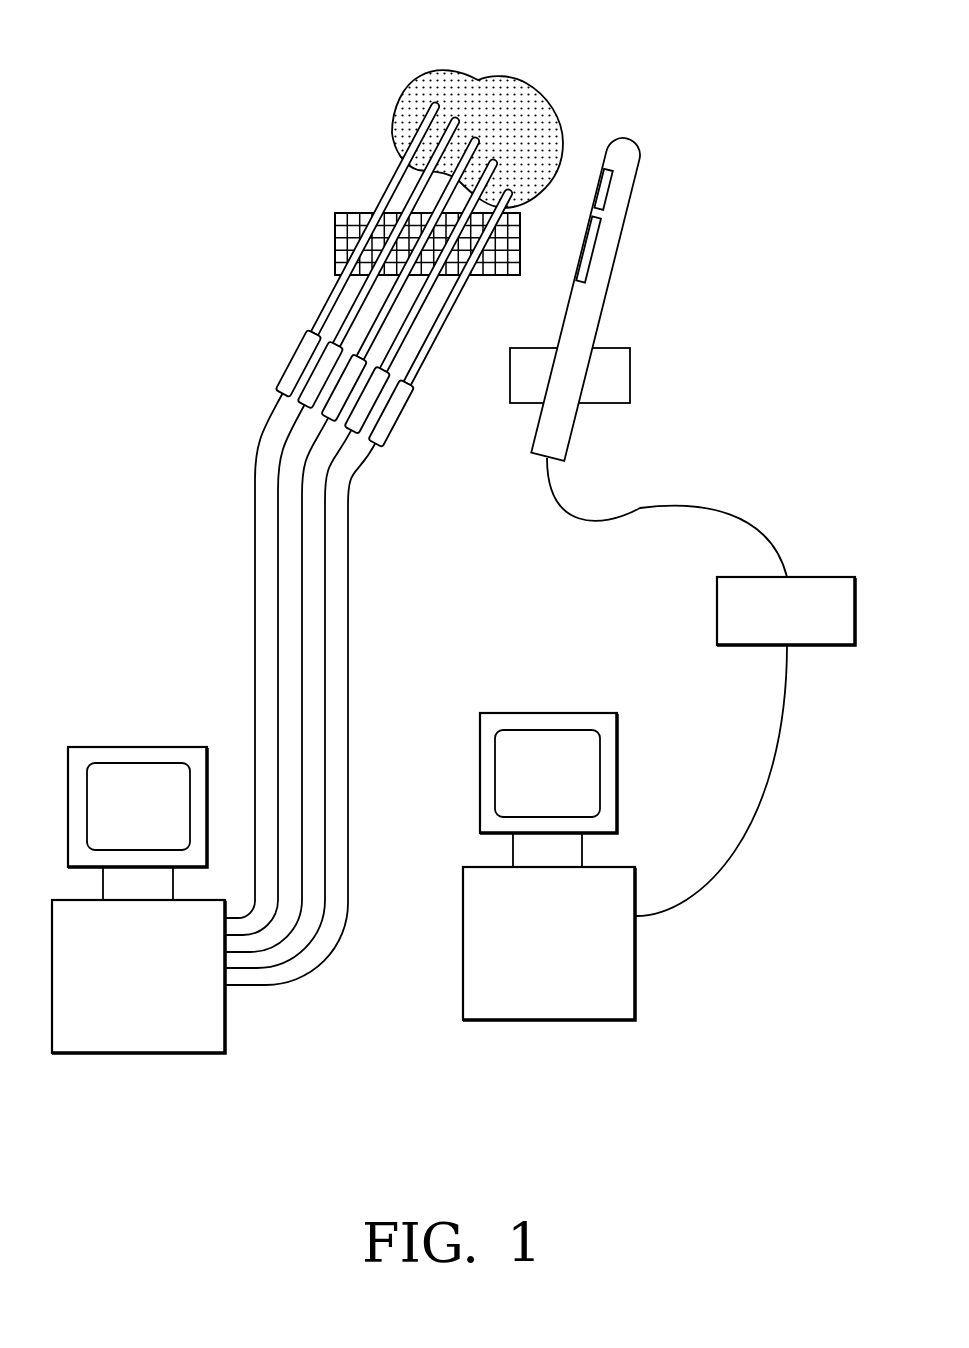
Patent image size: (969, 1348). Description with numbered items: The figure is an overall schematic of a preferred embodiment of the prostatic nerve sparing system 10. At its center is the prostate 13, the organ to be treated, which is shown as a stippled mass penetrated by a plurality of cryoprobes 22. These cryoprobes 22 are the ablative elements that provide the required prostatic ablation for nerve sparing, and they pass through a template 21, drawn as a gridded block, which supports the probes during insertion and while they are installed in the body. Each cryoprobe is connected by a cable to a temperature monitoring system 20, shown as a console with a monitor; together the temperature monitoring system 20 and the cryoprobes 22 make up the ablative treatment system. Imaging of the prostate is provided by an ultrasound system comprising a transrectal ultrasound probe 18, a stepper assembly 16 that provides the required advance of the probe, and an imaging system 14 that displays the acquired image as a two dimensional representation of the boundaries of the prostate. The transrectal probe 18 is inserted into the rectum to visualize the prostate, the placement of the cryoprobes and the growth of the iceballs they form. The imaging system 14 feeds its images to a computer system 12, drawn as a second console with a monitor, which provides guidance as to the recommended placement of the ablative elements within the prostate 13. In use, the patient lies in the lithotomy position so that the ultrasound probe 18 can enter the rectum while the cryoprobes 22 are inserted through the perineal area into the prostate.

The prostatic nerve sparing system 10 is at (764, 975).
The computer system 12 is at (547, 1035).
The prostate 13 is at (512, 72).
The ultrasound system 14 is at (812, 577).
The stepper assembly 16 is at (630, 374).
The transrectal ultrasound probe 18 is at (603, 282).
The temperature monitoring system 20 is at (137, 1073).
The template 21 is at (336, 240).
The cryoprobes 22 is at (323, 317).